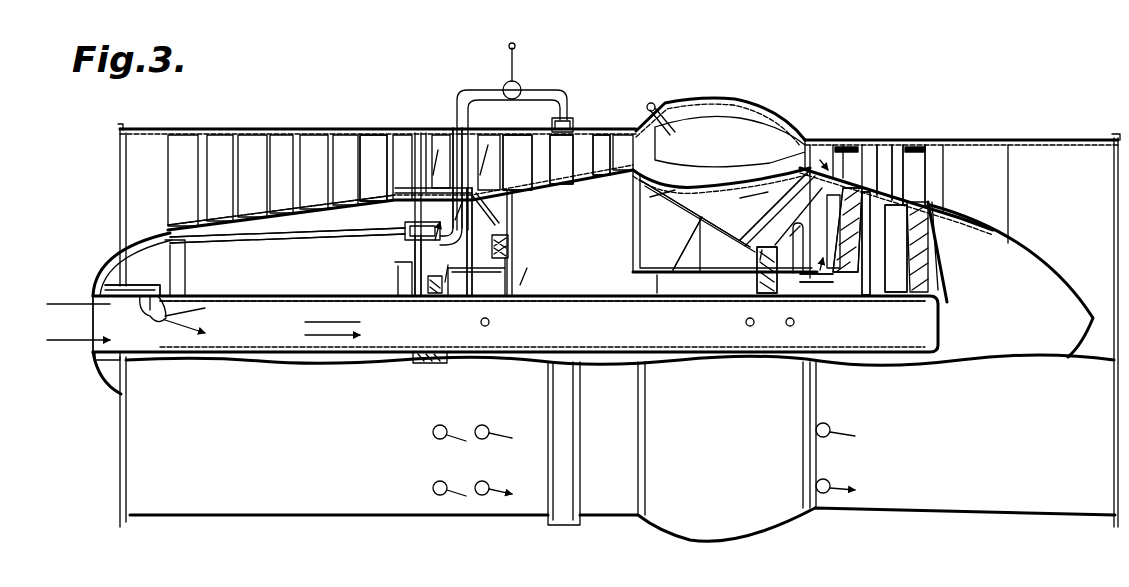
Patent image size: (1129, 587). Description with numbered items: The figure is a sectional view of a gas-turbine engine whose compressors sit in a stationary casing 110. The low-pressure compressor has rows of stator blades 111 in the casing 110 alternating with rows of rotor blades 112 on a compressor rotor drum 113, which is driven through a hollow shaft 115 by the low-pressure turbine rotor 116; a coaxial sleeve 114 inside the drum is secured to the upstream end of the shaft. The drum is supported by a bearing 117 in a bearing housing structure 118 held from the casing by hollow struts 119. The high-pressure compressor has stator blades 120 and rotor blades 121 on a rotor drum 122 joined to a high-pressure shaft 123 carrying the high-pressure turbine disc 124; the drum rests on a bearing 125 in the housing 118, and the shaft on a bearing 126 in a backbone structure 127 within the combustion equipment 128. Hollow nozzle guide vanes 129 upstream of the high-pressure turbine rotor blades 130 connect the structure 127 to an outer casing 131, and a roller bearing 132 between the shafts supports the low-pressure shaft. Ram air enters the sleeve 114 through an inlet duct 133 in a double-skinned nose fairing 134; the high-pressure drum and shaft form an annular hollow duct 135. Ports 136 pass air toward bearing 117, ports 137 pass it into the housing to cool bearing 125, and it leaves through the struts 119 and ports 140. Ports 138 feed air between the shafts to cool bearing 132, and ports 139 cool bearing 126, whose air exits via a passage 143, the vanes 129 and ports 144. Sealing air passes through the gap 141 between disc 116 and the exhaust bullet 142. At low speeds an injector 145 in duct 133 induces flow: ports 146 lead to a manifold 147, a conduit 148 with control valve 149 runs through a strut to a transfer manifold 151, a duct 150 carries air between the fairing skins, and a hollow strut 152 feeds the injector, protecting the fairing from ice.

The stationary casing 110 is at (165, 132).
The stator blades 111 is at (345, 133).
The rotor blades 112 is at (308, 195).
The compressor rotor drum 113 is at (338, 204).
The coaxial sleeve 114 is at (291, 263).
The shaft 115 is at (572, 290).
The low-pressure turbine rotor 116 is at (940, 273).
The bearing 117 is at (359, 321).
The bearing housing structure 118 is at (395, 262).
The hollow struts 119 is at (392, 138).
The stator blades 120 is at (585, 143).
The rotor blades 121 is at (575, 183).
The rotor drum 122 is at (520, 188).
The high-pressure shaft 123 is at (660, 295).
The high-pressure turbine disc 124 is at (862, 295).
The bearing 125 is at (512, 252).
The bearing 126 is at (757, 243).
The backbone structure 127 is at (700, 213).
The combustion equipment 128 is at (715, 112).
The hollow nozzle guide vanes 129 is at (845, 145).
The high-pressure turbine rotor blades 130 is at (873, 142).
The outer casing 131 is at (888, 142).
The roller bearing 132 is at (810, 300).
The inlet duct 133 is at (92, 320).
The double-skinned nose fairing 134 is at (100, 282).
The annular hollow duct 135 is at (650, 278).
The ports 136 is at (478, 303).
The ports 137 is at (508, 302).
The ports 138 is at (800, 343).
The ports 139 is at (728, 298).
The ports 140 is at (443, 130).
The gap 141 is at (940, 225).
The exhaust bullet 142 is at (1080, 290).
The passage 143 is at (782, 193).
The ports 144 is at (820, 142).
The injector 145 is at (162, 320).
The ports 146 is at (552, 120).
The manifold 147 is at (572, 118).
The conduit 148 is at (555, 88).
The control valve 149 is at (503, 84).
The duct 150 is at (246, 243).
The transfer manifold 151 is at (400, 235).
The hollow strut 152 is at (160, 296).